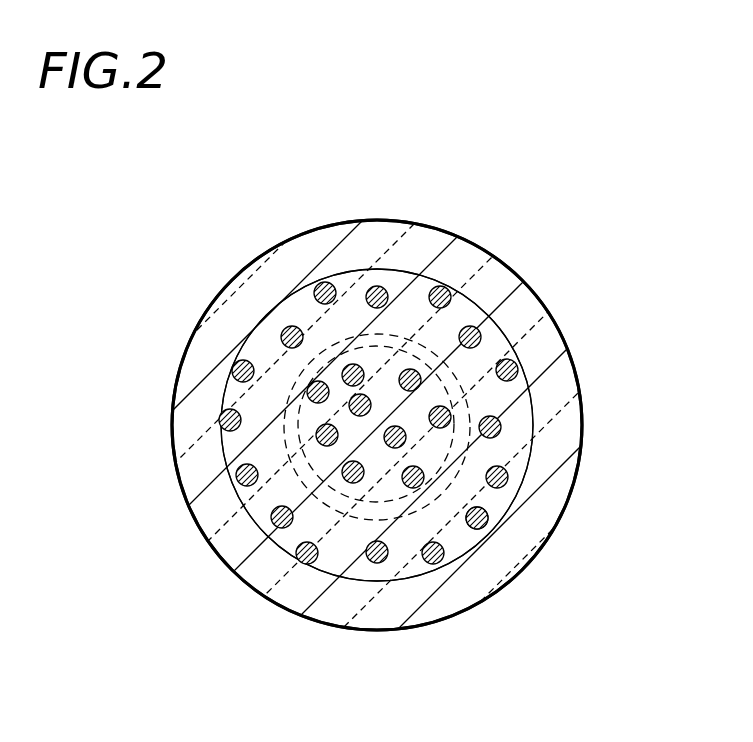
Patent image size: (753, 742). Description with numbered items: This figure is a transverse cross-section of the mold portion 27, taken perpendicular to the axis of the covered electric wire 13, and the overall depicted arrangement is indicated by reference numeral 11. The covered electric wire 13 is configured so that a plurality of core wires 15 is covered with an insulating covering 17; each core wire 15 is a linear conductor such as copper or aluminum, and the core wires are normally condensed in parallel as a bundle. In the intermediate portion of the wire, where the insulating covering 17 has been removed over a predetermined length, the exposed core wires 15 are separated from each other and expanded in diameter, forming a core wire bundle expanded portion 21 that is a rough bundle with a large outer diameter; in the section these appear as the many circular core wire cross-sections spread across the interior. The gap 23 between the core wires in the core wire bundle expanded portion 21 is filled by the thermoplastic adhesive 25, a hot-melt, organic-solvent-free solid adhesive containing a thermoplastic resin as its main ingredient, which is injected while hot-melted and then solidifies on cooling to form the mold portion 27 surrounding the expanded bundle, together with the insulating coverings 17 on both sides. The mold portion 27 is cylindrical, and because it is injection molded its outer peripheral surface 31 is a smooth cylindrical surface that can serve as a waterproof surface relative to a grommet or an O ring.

The honeycomb structure body 11 is at (605, 292).
The covered electric wire 13 is at (440, 345).
The core wire 15 is at (487, 524).
The insulating covering 17 is at (465, 423).
The core wire bundle expanded portion 21 is at (257, 528).
The gap 23 is at (408, 543).
The thermoplastic adhesive 25 is at (537, 521).
The mold portion 27 is at (398, 221).
The outer peripheral surface 31 is at (313, 231).